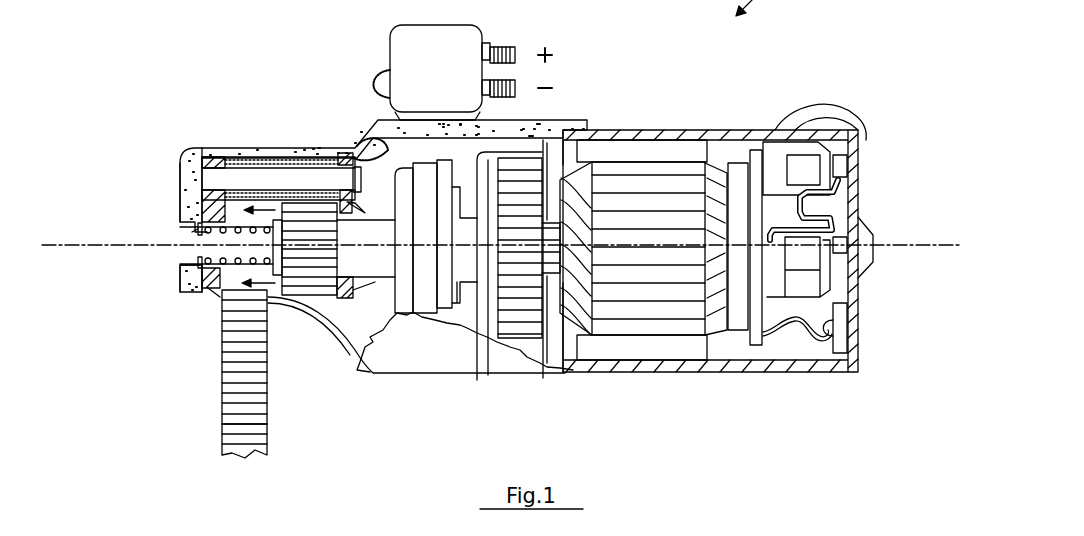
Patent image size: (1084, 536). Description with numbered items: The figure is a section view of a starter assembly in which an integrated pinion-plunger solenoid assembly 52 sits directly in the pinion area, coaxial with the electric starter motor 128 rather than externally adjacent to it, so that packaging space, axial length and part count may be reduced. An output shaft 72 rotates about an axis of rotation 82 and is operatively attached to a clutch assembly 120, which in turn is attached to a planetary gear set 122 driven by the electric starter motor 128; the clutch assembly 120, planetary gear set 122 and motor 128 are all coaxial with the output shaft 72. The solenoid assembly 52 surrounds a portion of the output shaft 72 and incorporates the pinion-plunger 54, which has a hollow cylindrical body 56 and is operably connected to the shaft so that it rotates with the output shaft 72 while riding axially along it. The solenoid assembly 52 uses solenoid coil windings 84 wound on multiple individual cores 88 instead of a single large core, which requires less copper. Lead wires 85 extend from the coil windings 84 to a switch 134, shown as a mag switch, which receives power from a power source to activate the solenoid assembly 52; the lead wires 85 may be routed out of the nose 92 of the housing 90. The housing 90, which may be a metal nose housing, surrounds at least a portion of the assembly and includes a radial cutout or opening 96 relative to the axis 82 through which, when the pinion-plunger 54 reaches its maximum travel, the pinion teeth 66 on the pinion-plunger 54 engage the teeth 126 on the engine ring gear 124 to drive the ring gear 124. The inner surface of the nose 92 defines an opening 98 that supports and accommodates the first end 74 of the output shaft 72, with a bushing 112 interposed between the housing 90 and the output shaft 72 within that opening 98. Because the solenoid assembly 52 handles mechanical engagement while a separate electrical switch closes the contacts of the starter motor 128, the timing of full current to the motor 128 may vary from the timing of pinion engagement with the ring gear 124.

The solenoid assembly 52 is at (170, 135).
The pinion-plunger 54 is at (313, 298).
The hollow cylindrical body 56 is at (375, 230).
The pinion teeth 66 is at (350, 287).
The output shaft 72 is at (195, 230).
The first end 74 is at (158, 280).
The axis of rotation 82 is at (82, 245).
The solenoid coil winding 84 is at (250, 158).
The lead wires 85 is at (372, 97).
The cores 88 is at (217, 180).
The housing 90 is at (535, 128).
The nose 92 is at (190, 185).
The radial cutout or opening 96 is at (209, 284).
The opening 98 is at (192, 232).
The bushing 112 is at (192, 265).
The clutch assembly 120 is at (425, 303).
The planetary gear set 122 is at (492, 320).
The engine ring gear 124 is at (268, 395).
The ring gear teeth 126 is at (233, 423).
The electric starter motor 128 is at (712, 177).
The switch 134 is at (390, 32).